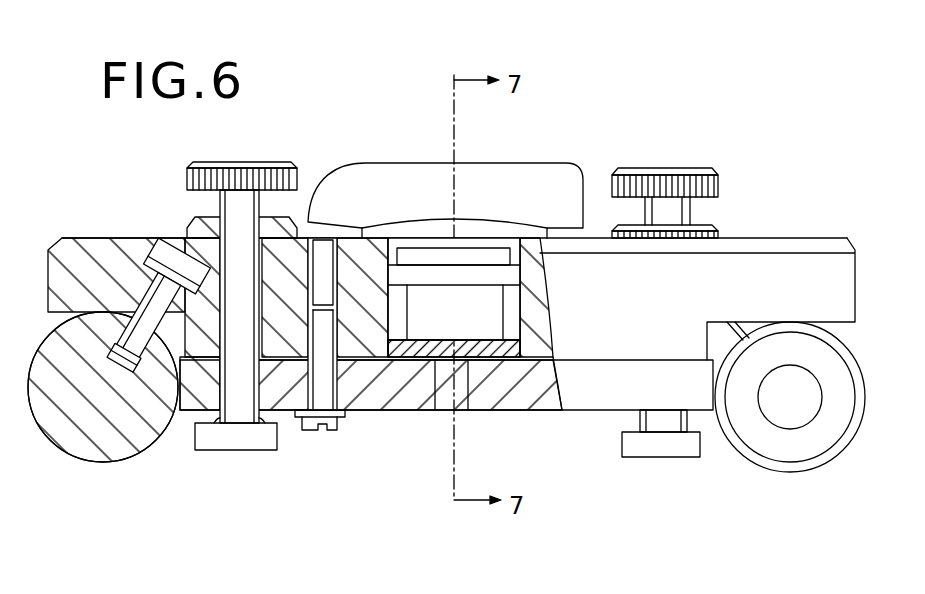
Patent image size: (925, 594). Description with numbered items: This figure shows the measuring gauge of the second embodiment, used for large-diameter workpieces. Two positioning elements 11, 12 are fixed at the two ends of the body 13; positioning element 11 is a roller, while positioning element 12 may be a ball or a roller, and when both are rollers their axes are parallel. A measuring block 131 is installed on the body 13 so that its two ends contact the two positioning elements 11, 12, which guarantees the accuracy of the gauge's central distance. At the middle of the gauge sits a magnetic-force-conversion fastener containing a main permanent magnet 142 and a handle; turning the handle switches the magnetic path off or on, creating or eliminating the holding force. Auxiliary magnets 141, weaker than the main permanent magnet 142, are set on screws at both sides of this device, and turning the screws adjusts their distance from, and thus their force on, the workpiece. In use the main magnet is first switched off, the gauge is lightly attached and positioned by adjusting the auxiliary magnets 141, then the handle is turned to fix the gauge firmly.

The positioning element 11 is at (763, 435).
The positioning element 12 is at (105, 433).
The body 13 is at (732, 282).
The measuring block 131 is at (605, 388).
The auxiliary magnet 141 is at (247, 437).
The main permanent magnet 142 is at (477, 314).